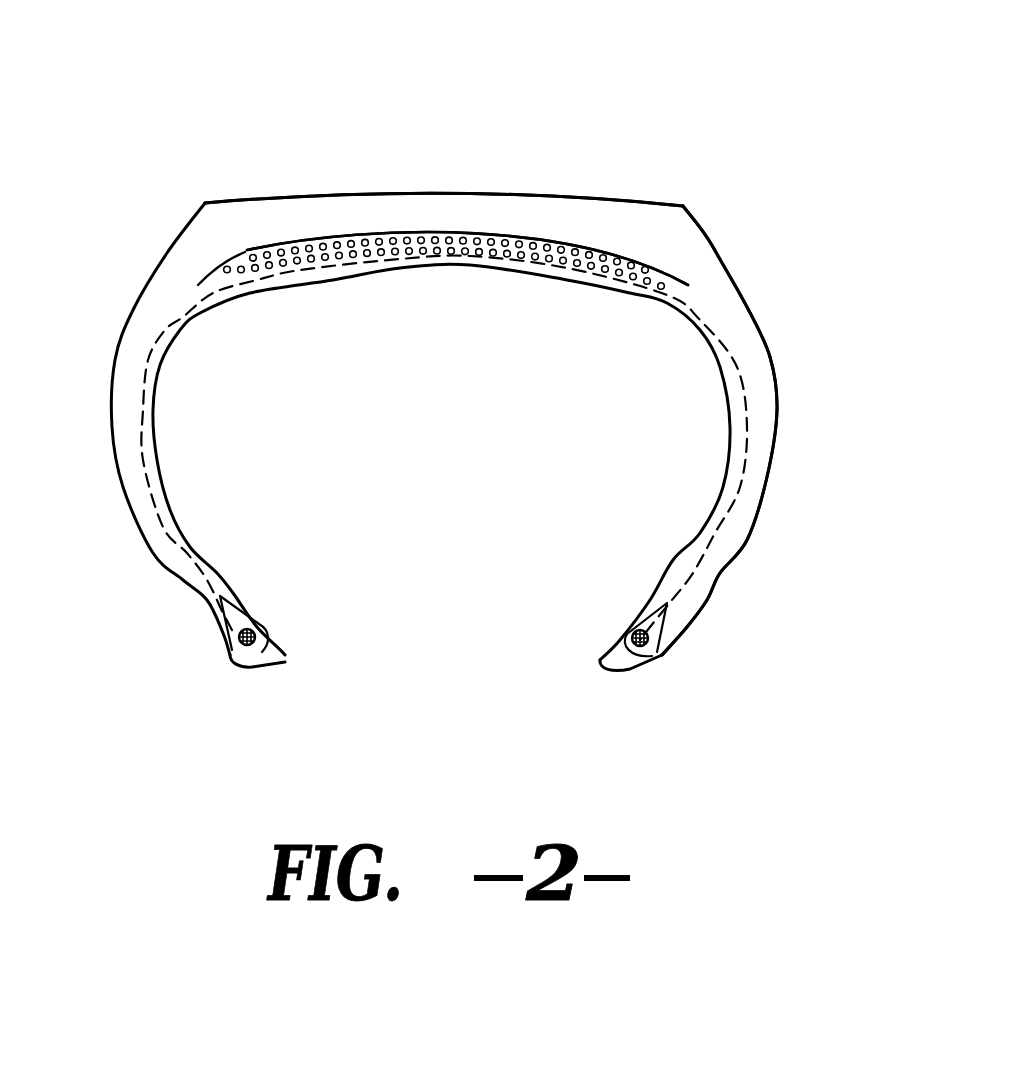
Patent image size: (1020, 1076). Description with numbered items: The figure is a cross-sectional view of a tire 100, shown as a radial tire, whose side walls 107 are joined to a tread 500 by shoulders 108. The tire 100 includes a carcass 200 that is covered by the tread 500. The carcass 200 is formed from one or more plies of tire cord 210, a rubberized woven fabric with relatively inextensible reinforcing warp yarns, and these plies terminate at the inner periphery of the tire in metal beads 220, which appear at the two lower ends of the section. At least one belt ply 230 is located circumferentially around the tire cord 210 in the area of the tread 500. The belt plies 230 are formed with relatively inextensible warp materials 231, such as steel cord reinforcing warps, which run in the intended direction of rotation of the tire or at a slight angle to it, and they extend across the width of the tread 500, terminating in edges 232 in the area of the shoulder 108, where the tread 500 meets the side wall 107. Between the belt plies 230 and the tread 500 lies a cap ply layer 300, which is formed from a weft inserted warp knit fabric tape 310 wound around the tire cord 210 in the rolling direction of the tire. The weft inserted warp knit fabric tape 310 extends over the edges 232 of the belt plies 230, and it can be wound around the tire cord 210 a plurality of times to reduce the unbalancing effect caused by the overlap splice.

The tire 100 is at (170, 122).
The side wall 107 is at (745, 545).
The shoulder 108 is at (663, 230).
The carcass 200 is at (778, 324).
The tire cord 210 is at (778, 410).
The metal bead 220 is at (237, 653).
The belt ply 230 is at (444, 244).
The inextensible warp material 231 is at (383, 265).
The edge 232 is at (228, 282).
The cap ply layer 300 is at (196, 263).
The weft inserted warp knit fabric tape 310 is at (296, 238).
The tread 500 is at (568, 210).